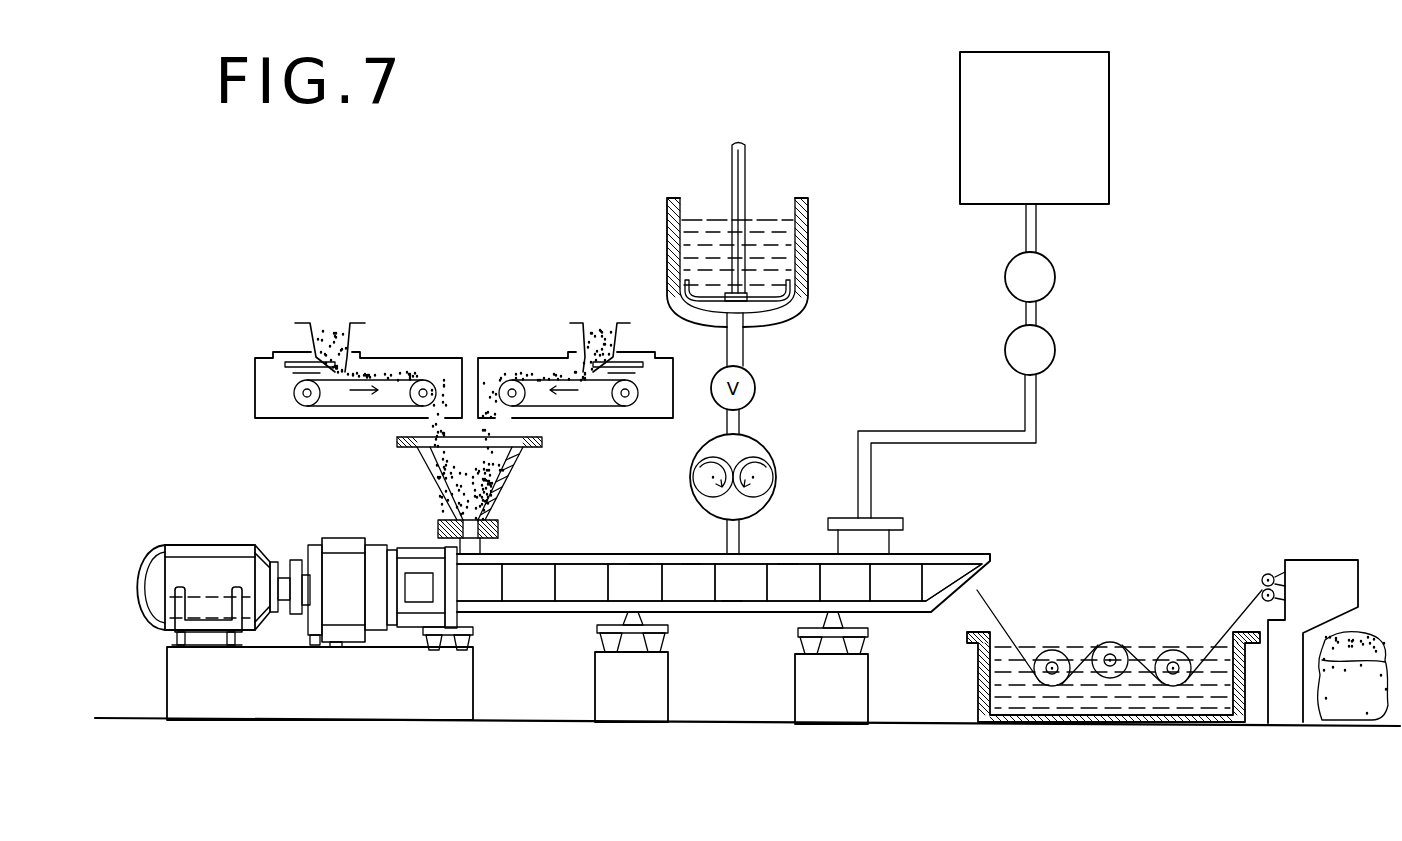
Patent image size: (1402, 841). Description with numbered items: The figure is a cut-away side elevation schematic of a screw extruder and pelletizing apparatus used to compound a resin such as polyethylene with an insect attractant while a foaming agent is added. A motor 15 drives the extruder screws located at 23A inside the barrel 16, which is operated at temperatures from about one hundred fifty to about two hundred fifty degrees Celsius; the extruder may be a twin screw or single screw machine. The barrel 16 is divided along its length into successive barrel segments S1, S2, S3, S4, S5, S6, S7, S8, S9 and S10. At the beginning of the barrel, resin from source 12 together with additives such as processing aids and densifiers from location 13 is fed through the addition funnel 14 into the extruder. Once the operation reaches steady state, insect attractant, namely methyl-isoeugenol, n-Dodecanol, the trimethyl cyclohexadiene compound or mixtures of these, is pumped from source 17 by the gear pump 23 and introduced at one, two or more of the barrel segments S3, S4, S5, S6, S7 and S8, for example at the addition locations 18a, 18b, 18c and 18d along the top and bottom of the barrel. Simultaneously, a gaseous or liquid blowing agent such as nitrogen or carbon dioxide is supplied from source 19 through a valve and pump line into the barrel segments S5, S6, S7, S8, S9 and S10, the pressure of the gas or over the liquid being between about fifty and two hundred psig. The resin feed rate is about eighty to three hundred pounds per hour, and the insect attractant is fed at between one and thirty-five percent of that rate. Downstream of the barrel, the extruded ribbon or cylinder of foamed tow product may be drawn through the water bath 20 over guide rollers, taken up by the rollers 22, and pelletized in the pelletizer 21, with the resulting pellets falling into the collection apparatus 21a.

The resin source 12 is at (336, 315).
The additives location 13 is at (604, 315).
The addition funnel 14 is at (430, 460).
The motor 15 is at (198, 572).
The barrel 16 is at (527, 613).
The insect attractant source 17 is at (808, 212).
The insect attractant addition location 18a is at (638, 565).
The insect attractant addition location 18b is at (690, 565).
The insect attractant addition location 18c is at (740, 597).
The insect attractant addition location 18d is at (787, 568).
The blowing agent source 19 is at (1081, 127).
The water bath 20 is at (975, 697).
The pelletizer 21 is at (1313, 570).
The collection apparatus 21a is at (1350, 705).
The take-up rollers 22 is at (1250, 604).
The gear pump 23 is at (745, 452).
The extruder screws 23A is at (348, 607).
The barrel segment S1 is at (480, 593).
The barrel segment S2 is at (515, 575).
The barrel segment S3 is at (567, 590).
The barrel segment S4 is at (617, 575).
The barrel segment S5 is at (665, 593).
The barrel segment S6 is at (722, 597).
The barrel segment S7 is at (777, 590).
The barrel segment S8 is at (855, 597).
The barrel segment S9 is at (900, 592).
The barrel segment S10 is at (942, 582).